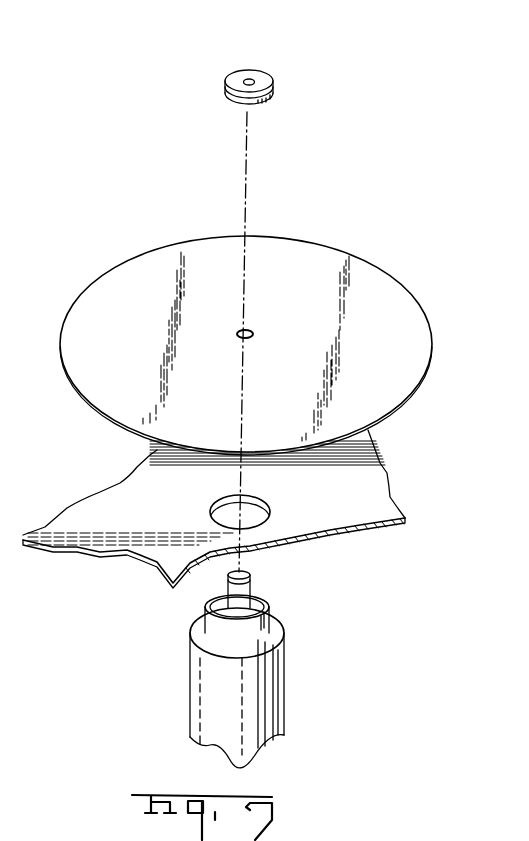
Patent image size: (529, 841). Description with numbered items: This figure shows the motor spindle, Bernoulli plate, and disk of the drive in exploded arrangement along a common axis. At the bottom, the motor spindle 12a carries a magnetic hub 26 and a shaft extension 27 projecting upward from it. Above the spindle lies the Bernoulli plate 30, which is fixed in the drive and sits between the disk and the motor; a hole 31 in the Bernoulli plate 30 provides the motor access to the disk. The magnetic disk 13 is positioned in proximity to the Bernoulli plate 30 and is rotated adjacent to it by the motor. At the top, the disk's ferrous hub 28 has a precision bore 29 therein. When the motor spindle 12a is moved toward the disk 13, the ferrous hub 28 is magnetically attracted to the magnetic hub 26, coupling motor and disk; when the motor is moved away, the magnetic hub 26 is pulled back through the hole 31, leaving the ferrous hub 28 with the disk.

The motor spindle 12a is at (272, 688).
The magnetic disk 13 is at (425, 337).
The magnetic hub 26 is at (268, 623).
The shaft extension 27 is at (246, 592).
The ferrous hub 28 is at (266, 82).
The precision bore 29 is at (249, 78).
The Bernoulli plate 30 is at (374, 472).
The hole 31 is at (250, 502).